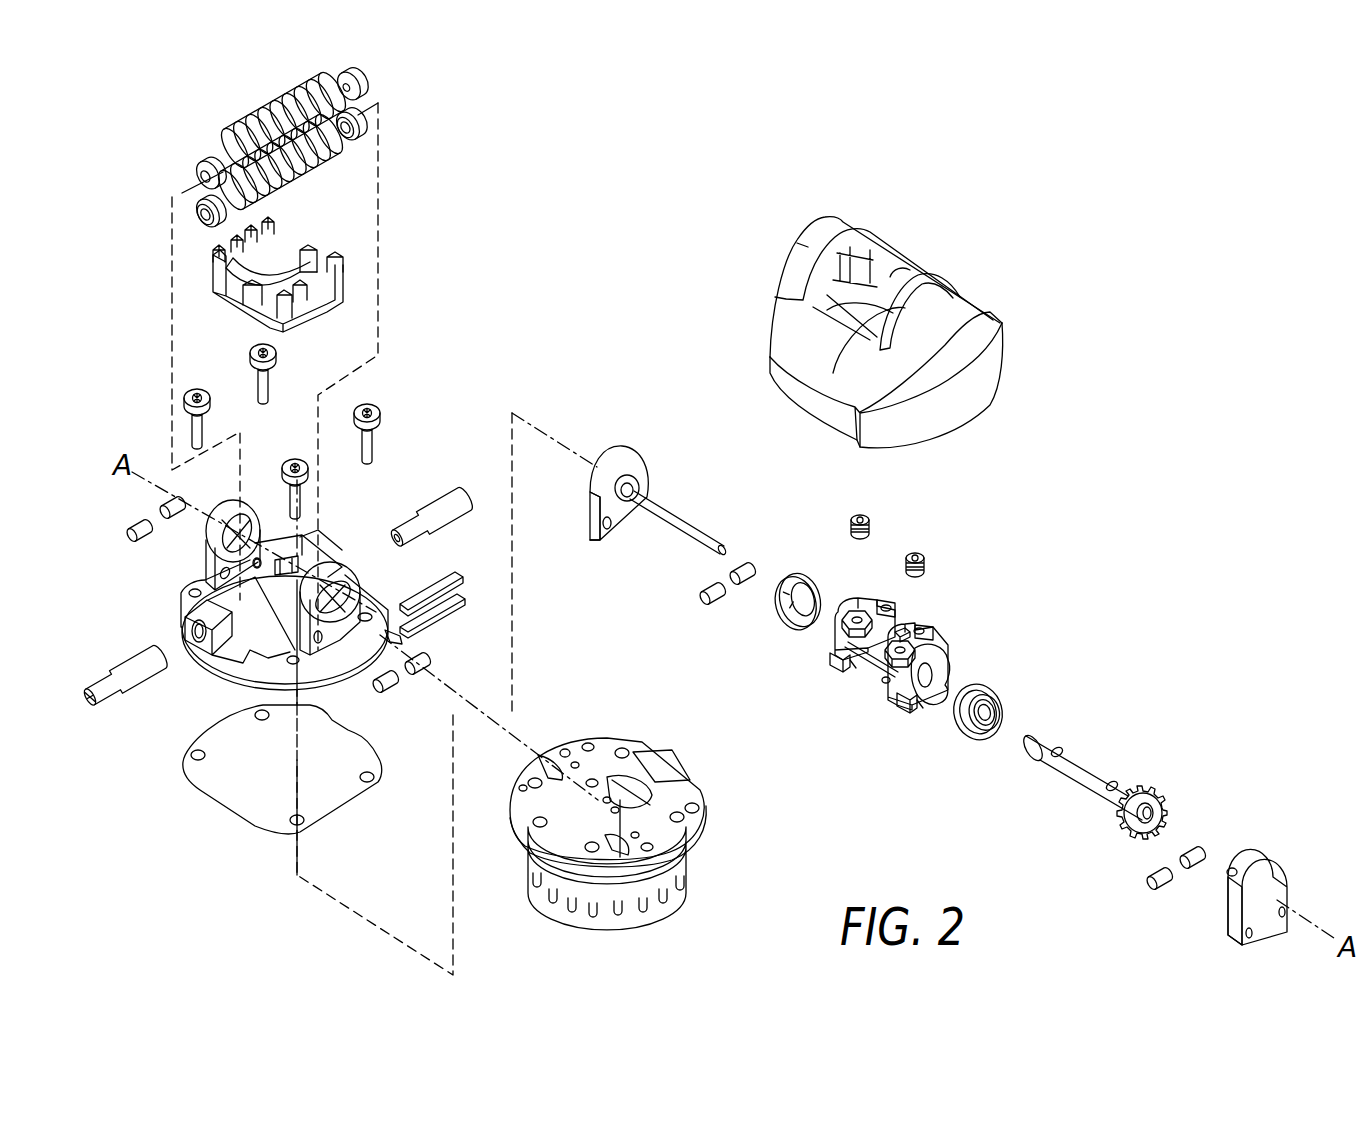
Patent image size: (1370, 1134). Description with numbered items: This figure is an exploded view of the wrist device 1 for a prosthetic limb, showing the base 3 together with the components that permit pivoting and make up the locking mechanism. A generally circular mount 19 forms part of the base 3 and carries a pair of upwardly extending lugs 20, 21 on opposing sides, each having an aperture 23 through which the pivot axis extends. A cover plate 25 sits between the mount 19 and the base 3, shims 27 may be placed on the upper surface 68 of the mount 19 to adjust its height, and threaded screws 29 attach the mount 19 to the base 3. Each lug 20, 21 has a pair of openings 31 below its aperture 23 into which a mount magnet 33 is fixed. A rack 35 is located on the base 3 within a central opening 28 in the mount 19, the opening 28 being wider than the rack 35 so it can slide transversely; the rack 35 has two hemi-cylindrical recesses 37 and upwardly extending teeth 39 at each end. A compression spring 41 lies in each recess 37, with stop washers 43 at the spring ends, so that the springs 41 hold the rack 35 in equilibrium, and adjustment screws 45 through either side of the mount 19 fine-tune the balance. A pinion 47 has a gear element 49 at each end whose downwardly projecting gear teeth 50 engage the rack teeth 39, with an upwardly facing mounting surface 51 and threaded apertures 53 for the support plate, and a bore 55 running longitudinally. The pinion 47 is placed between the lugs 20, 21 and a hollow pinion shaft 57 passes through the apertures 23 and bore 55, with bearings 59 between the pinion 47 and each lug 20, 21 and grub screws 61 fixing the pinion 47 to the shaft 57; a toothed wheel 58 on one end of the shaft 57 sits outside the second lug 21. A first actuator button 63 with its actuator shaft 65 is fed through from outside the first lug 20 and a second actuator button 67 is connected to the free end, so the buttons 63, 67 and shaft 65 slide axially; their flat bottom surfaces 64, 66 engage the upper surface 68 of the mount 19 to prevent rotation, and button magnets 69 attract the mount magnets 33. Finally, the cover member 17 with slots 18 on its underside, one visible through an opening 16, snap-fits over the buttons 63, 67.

The wrist device 1 is at (606, 166).
The base 3 is at (688, 848).
The opening 16 is at (875, 318).
The cover member 17 is at (803, 232).
The slots 18 is at (878, 256).
The mount 19 is at (282, 592).
The first mount lug 20 is at (208, 560).
The second mount lug 21 is at (365, 582).
The aperture 23 is at (238, 525).
The cover plate 25 is at (185, 775).
The shims 27 is at (455, 585).
The central opening 28 is at (240, 650).
The threaded screws 29 is at (278, 353).
The openings 31 is at (264, 574).
The mount magnet 33 is at (135, 530).
The rack 35 is at (275, 276).
The hemi-cylindrical recesses 37 is at (283, 252).
The teeth 39 is at (228, 250).
The compression spring 41 is at (272, 132).
The stop washers 43 is at (196, 176).
The adjustment screws 45 is at (443, 502).
The pinion 47 is at (886, 660).
The gear element 49 is at (832, 650).
The gear teeth 50 is at (932, 746).
The mounting surface 51 is at (895, 600).
The threaded apertures 53 is at (884, 604).
The bore 55 is at (948, 682).
The pinion shaft 57 is at (1087, 765).
The toothed wheel 58 is at (1150, 790).
The bearings 59 is at (786, 612).
The grub screws 61 is at (914, 552).
The first actuator button 63 is at (619, 486).
The flat bottom surface 64 is at (614, 520).
The actuator shaft 65 is at (690, 523).
The flat bottom surface 66 is at (1268, 940).
The second actuator button 67 is at (1263, 893).
The upper surface 68 is at (394, 637).
The button magnets 69 is at (742, 565).